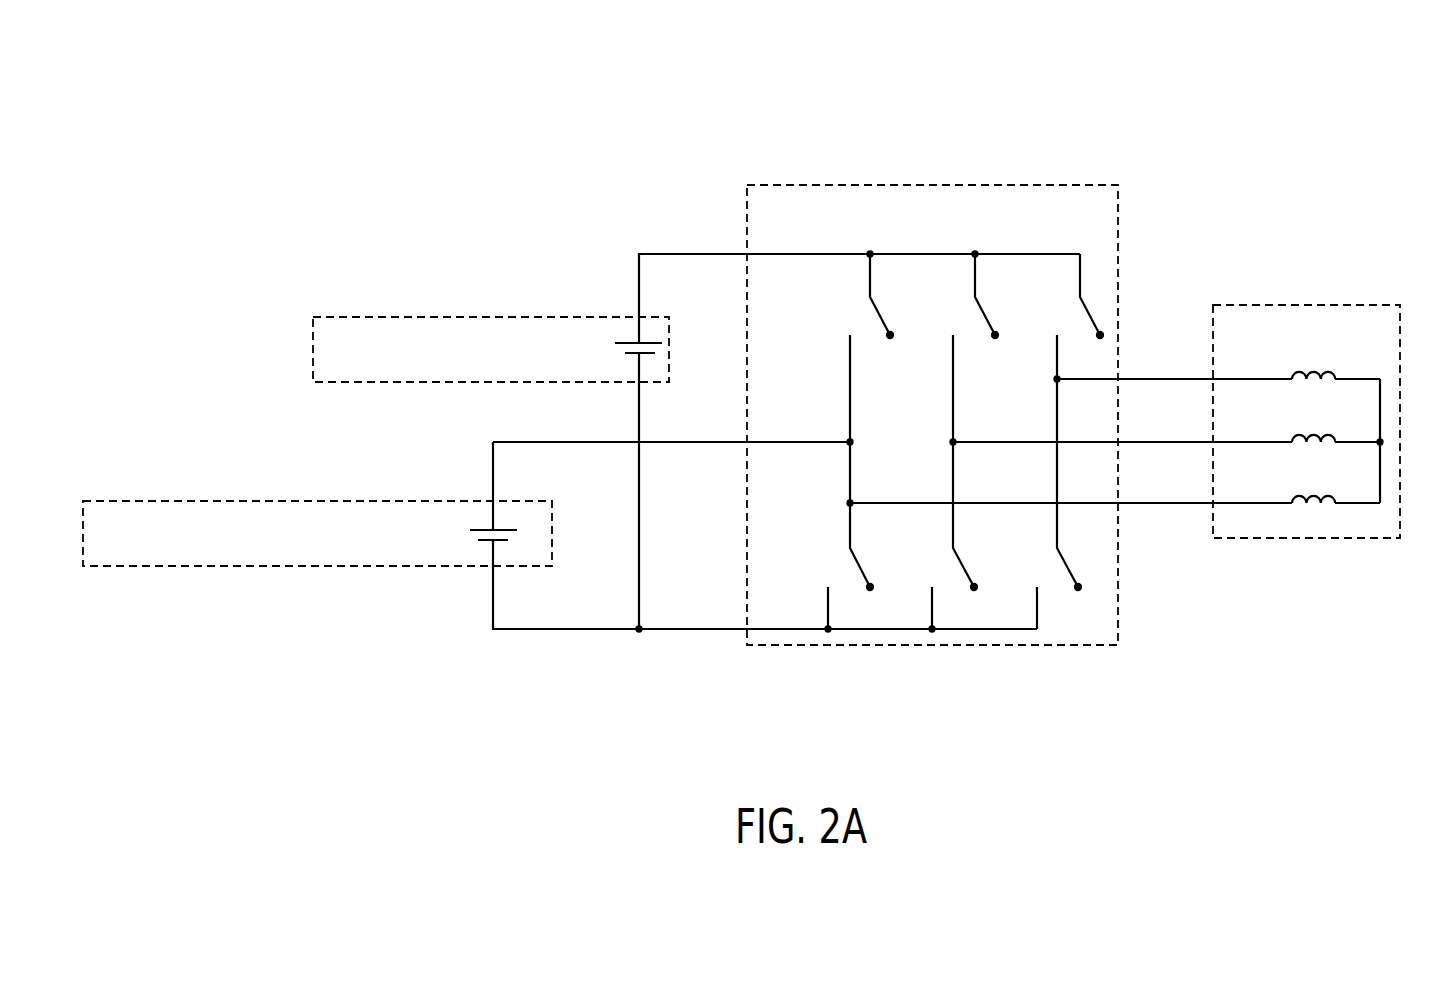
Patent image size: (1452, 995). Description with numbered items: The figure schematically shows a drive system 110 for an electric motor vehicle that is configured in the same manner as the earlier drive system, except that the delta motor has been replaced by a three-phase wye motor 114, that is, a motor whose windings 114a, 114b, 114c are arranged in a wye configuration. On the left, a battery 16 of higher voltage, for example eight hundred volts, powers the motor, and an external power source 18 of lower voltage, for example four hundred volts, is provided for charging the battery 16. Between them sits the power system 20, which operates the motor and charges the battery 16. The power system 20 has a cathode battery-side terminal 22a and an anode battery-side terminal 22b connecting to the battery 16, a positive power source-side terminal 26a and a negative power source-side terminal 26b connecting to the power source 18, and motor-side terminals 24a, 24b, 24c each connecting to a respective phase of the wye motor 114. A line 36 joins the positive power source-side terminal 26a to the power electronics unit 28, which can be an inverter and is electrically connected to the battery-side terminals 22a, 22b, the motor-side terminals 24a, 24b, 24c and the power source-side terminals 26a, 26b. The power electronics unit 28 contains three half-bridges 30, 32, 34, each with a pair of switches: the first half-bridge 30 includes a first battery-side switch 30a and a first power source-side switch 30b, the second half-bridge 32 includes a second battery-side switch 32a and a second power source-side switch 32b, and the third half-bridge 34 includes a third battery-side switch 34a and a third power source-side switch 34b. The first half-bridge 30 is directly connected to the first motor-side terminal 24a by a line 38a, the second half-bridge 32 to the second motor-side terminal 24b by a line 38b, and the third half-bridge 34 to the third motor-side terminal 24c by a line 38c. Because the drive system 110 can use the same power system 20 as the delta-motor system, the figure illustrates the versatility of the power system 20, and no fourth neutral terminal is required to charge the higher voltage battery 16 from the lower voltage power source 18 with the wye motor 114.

The drive system 110 is at (424, 136).
The power system 20 is at (938, 185).
The battery 16 is at (480, 315).
The external power source 18 is at (215, 500).
The cathode battery-side terminal 22a is at (616, 296).
The anode battery-side terminal 22b is at (621, 397).
The positive power source-side terminal 26a is at (474, 464).
The negative power source-side terminal 26b is at (545, 645).
The charging source connection line 36 is at (677, 442).
The power electronics unit 28 is at (1105, 645).
The first battery-side switch 30a is at (882, 313).
The second battery-side switch 32a is at (987, 313).
The third battery-side switch 34a is at (1090, 313).
The first power source-side switch 30b is at (858, 563).
The second power source-side switch 32b is at (961, 563).
The third power source-side switch 34b is at (1064, 563).
The first half-bridge 30 is at (829, 652).
The second half-bridge 32 is at (933, 652).
The third half-bridge 34 is at (1038, 652).
The line 38a is at (1183, 505).
The line 38b is at (1122, 443).
The line 38c is at (1065, 381).
The first motor-side terminal 24a is at (1190, 489).
The second motor-side terminal 24b is at (1190, 427).
The third motor-side terminal 24c is at (1190, 364).
The three-phase wye motor 114 is at (1297, 305).
The first motor winding 114a is at (1335, 495).
The second motor winding 114b is at (1335, 432).
The third motor winding 114c is at (1333, 368).